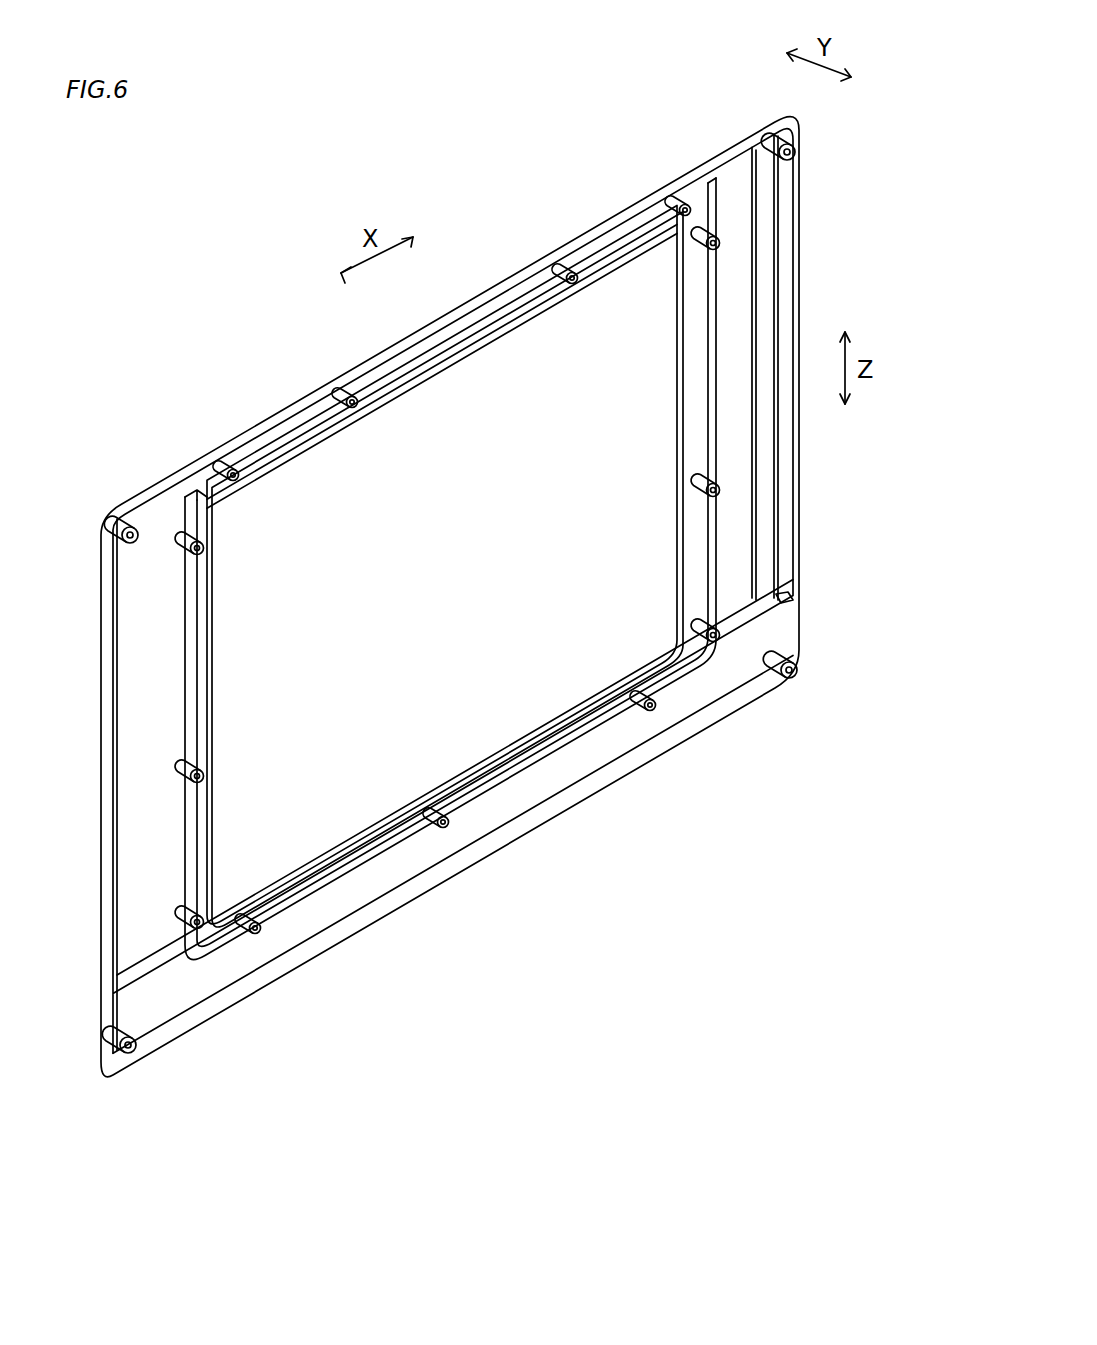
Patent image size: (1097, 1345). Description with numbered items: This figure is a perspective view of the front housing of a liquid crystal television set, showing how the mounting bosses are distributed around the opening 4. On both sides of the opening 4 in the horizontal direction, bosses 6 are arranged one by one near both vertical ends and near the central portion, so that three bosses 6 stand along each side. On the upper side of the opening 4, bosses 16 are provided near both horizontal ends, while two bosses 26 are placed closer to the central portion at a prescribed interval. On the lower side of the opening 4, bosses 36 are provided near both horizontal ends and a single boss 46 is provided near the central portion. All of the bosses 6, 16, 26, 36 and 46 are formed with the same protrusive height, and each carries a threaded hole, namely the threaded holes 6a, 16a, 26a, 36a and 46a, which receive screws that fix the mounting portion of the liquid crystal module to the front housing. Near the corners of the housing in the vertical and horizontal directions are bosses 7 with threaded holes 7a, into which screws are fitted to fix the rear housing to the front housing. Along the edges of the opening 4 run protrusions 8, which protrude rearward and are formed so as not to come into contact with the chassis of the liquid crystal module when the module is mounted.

The opening 4 is at (392, 808).
The bosses 6 is at (188, 546).
The threaded holes 6a is at (196, 553).
The bosses 7 is at (116, 524).
The threaded holes 7a is at (128, 527).
The protrusions 8 is at (681, 612).
The bosses 16 is at (227, 472).
The threaded holes 16a is at (233, 469).
The bosses 26 is at (345, 398).
The threaded holes 26a is at (351, 397).
The bosses 36 is at (262, 935).
The threaded holes 36a is at (256, 935).
The boss 46 is at (448, 830).
The threaded hole 46a is at (443, 830).